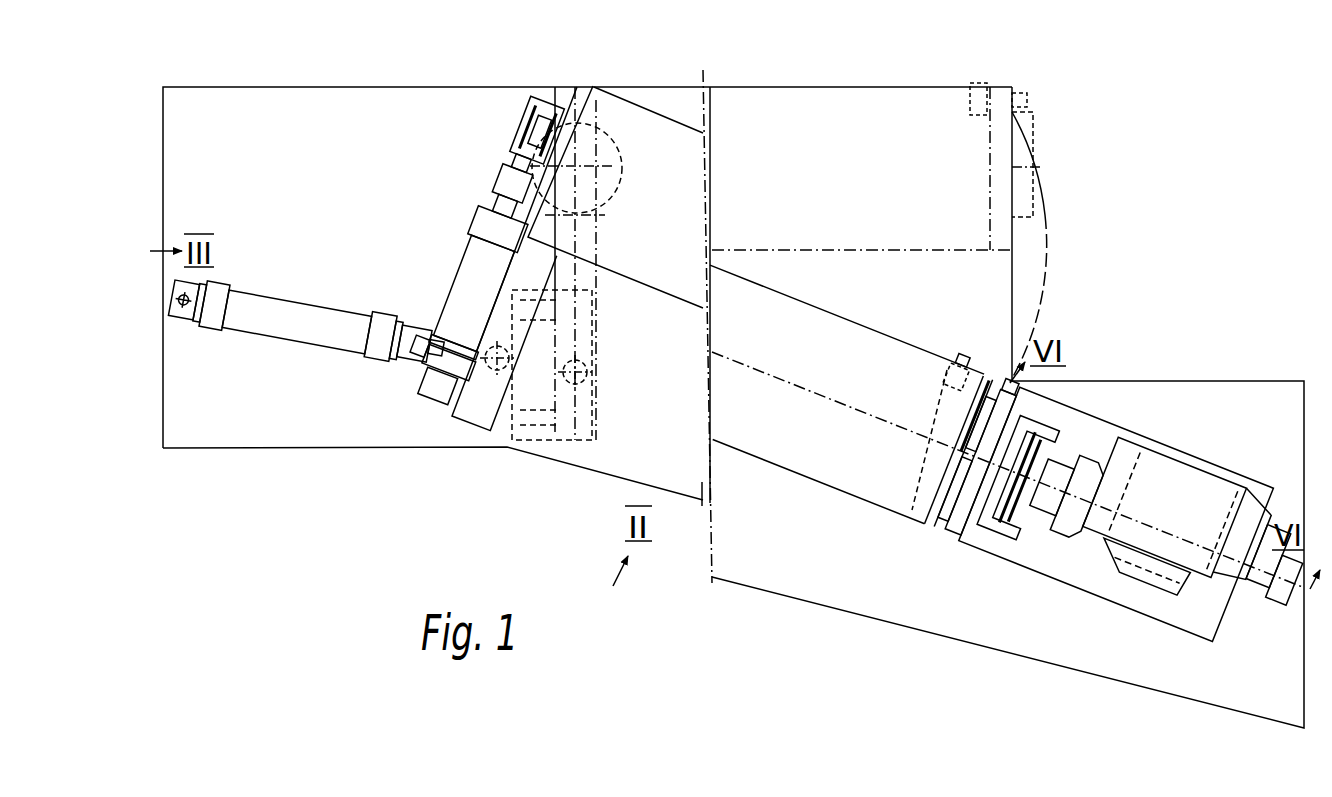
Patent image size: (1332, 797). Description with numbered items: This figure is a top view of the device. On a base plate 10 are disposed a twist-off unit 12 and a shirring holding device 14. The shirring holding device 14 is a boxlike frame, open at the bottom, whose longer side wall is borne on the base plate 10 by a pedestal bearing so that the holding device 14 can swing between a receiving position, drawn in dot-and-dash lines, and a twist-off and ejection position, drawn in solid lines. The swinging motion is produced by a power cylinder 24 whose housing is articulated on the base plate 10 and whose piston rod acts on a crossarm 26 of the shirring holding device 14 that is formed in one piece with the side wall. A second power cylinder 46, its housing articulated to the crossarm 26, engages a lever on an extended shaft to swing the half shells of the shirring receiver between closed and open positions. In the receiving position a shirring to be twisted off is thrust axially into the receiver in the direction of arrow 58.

The base plate 10 is at (389, 97).
The twist-off unit 12 is at (1137, 410).
The shirring holding device 14 is at (828, 85).
The power cylinder 24 is at (272, 318).
The crossarm 26 is at (483, 426).
The power cylinder 46 is at (470, 278).
The arrow 58 is at (1045, 165).